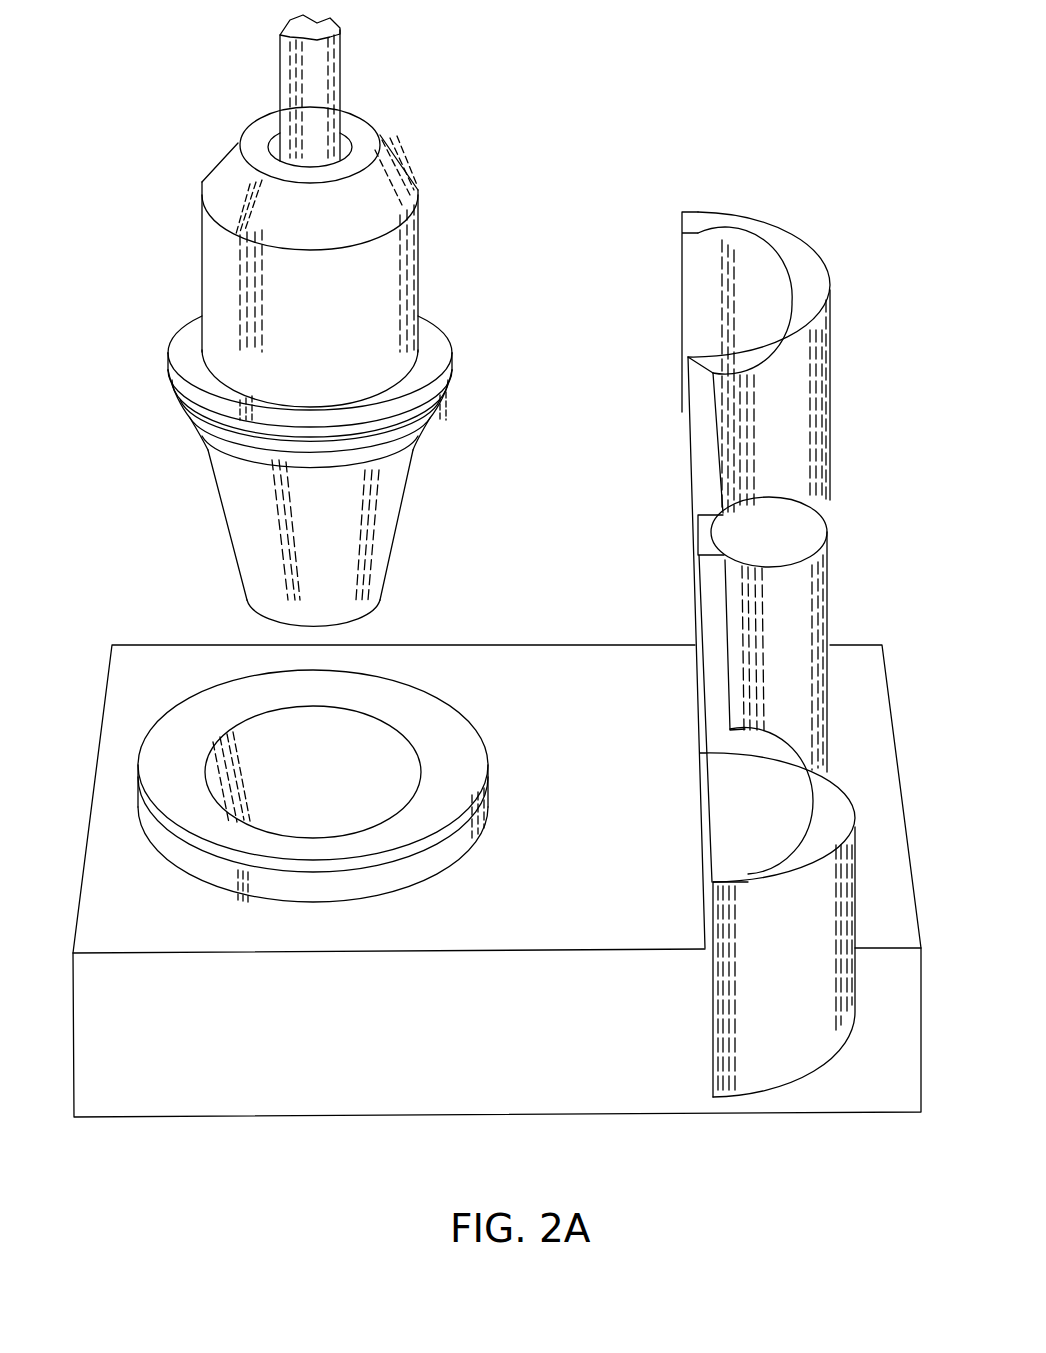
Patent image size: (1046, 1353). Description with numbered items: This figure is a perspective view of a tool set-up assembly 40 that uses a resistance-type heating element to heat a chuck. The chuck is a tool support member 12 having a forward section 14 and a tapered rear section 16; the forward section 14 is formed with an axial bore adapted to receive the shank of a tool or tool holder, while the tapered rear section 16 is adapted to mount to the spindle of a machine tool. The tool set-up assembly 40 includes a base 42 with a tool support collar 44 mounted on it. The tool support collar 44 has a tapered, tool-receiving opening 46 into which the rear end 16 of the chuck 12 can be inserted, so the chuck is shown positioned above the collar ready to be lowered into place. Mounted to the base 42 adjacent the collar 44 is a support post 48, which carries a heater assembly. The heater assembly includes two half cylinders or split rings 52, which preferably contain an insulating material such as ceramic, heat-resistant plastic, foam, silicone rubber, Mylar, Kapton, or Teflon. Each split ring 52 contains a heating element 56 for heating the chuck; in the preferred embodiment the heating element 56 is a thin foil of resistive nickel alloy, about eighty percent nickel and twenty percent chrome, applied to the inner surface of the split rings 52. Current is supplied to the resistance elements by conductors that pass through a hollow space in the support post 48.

The tool support member 12 is at (278, 320).
The forward section 14 is at (208, 238).
The tapered rear section 16 is at (240, 503).
The tool set-up assembly 40 is at (791, 614).
The base 42 is at (153, 675).
The tool support collar 44 is at (313, 726).
The tool-receiving opening 46 is at (278, 748).
The support post 48 is at (797, 637).
The split ring 52 is at (792, 248).
The heating element 56 is at (707, 250).